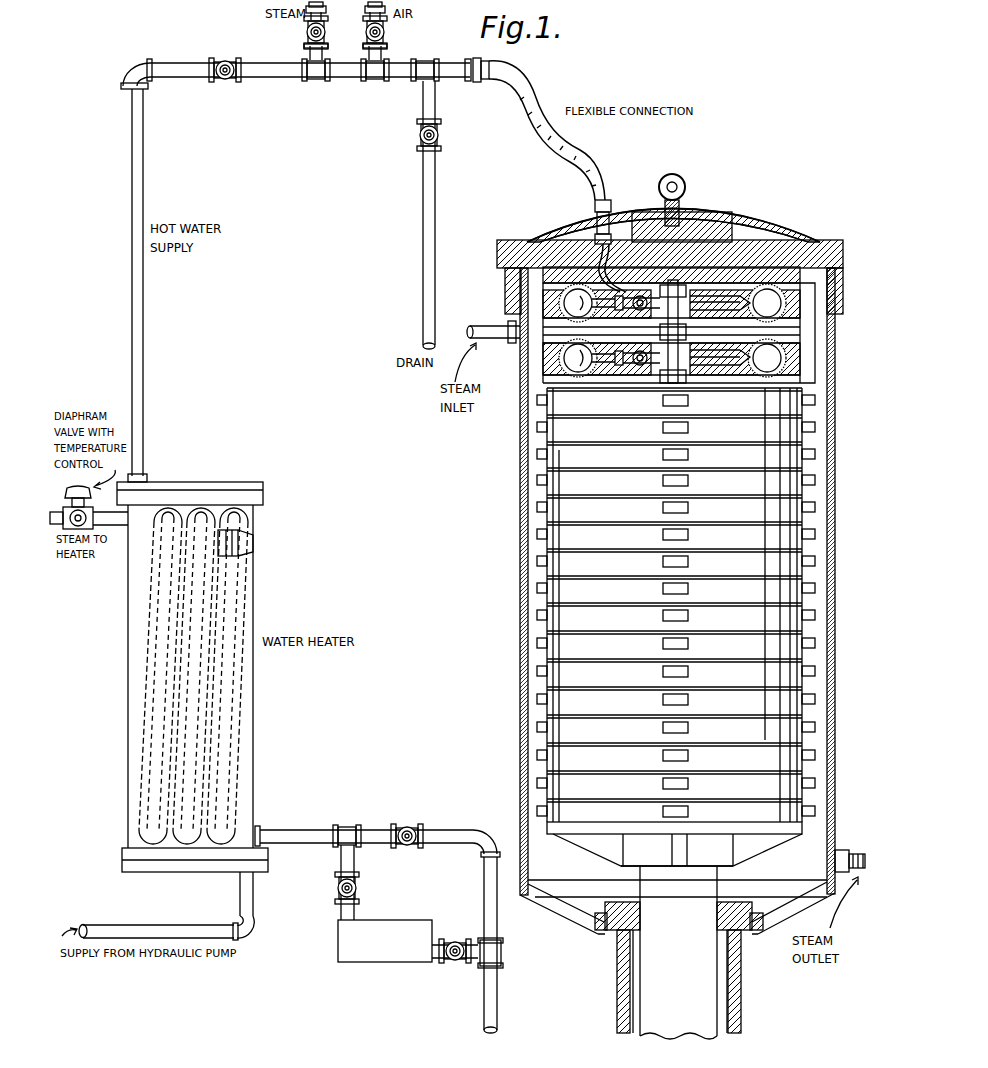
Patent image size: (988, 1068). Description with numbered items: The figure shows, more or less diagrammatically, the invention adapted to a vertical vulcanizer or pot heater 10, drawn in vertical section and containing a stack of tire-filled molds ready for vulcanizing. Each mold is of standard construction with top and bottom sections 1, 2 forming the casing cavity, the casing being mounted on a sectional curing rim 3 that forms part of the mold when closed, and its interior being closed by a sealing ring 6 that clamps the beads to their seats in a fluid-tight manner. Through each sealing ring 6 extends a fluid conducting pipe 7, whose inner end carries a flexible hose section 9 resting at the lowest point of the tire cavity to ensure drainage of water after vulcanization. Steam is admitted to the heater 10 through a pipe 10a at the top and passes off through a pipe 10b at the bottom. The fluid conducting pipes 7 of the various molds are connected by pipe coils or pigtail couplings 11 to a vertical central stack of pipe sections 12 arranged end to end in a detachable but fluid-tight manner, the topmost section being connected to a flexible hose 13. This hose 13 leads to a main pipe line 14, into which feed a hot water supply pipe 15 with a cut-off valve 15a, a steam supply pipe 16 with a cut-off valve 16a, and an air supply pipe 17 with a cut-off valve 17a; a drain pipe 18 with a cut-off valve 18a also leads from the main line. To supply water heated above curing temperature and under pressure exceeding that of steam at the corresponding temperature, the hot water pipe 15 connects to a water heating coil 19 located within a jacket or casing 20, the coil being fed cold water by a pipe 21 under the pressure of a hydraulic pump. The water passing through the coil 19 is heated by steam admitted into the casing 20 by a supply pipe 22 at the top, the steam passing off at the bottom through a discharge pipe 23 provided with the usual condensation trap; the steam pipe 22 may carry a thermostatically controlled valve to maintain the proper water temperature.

The top mold section 1 is at (776, 270).
The bottom mold section 2 is at (805, 332).
The sectional curing rim 3 is at (716, 300).
The sealing ring 6 is at (590, 378).
The fluid conducting pipe 7 is at (628, 298).
The flexible hose section 9 is at (560, 300).
The vertical vulcanizer or pot heater 10 is at (661, 606).
The steam inlet pipe 10a is at (482, 328).
The steam outlet pipe 10b is at (847, 850).
The pipe coil or pigtail coupling 11 is at (658, 318).
The pipe section 12 is at (684, 375).
The flexible hose 13 is at (600, 258).
The main pipe line 14 is at (280, 78).
The hot water supply pipe 15 is at (142, 160).
The cut-off valve 15a is at (222, 82).
The steam supply pipe 16 is at (305, 52).
The cut-off valve 16a is at (304, 32).
The air supply pipe 17 is at (388, 51).
The cut-off valve 17a is at (386, 32).
The drain pipe 18 is at (421, 100).
The cut-off valve 18a is at (413, 136).
The water heating coil 19 is at (248, 540).
The jacket or casing 20 is at (200, 677).
The cold water supply pipe 21 is at (240, 893).
The steam supply pipe 22 is at (90, 516).
The discharge pipe 23 is at (299, 832).